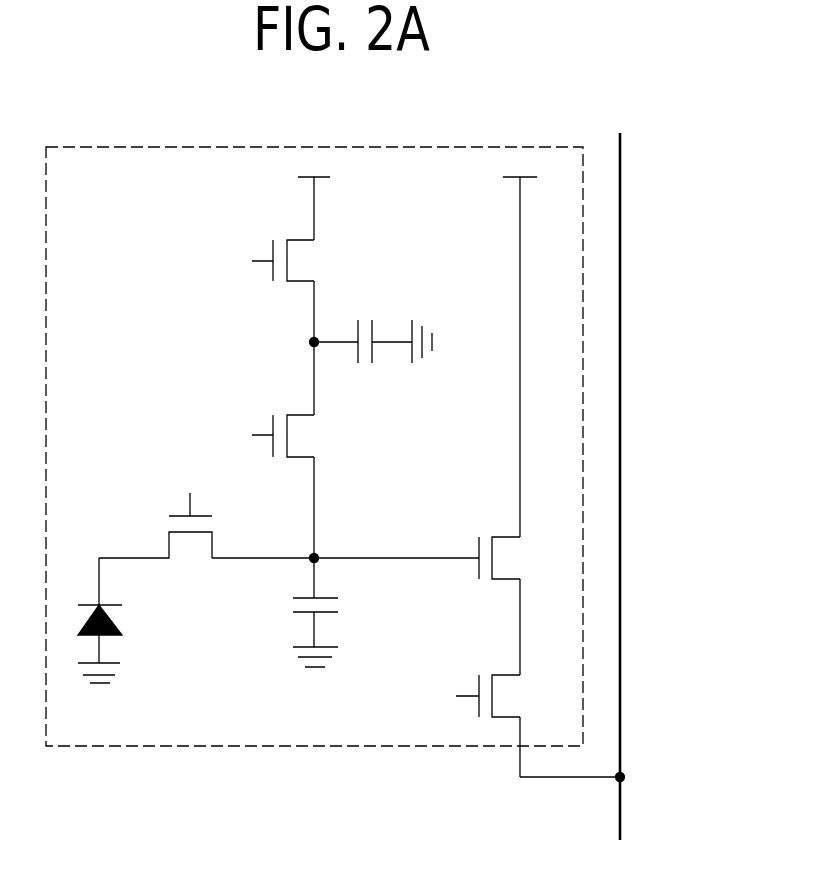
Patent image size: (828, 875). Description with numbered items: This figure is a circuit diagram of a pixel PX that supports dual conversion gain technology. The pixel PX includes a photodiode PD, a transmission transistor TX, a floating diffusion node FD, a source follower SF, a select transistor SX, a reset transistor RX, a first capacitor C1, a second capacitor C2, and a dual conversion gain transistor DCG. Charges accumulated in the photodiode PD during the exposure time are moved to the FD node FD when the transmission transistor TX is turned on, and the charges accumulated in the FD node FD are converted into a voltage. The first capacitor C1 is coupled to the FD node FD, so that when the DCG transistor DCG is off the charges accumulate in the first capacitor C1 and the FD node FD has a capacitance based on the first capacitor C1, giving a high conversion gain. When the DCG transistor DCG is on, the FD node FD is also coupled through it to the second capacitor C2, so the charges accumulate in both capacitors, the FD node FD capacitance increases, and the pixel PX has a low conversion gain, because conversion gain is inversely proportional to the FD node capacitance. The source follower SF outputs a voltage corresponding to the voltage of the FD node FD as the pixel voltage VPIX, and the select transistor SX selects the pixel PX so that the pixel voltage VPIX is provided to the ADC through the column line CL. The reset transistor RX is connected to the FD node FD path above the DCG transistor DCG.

The pixel PX is at (460, 147).
The reset transistor RX is at (300, 263).
The second capacitor C2 is at (371, 363).
The dual conversion gain transistor DCG is at (308, 438).
The floating diffusion node FD is at (345, 539).
The transmission transistor TX is at (155, 548).
The photodiode PD is at (118, 620).
The first capacitor C1 is at (332, 612).
The source follower SF is at (514, 558).
The select transistor SX is at (503, 697).
The column line CL is at (621, 273).
The pixel voltage VPIX is at (603, 804).